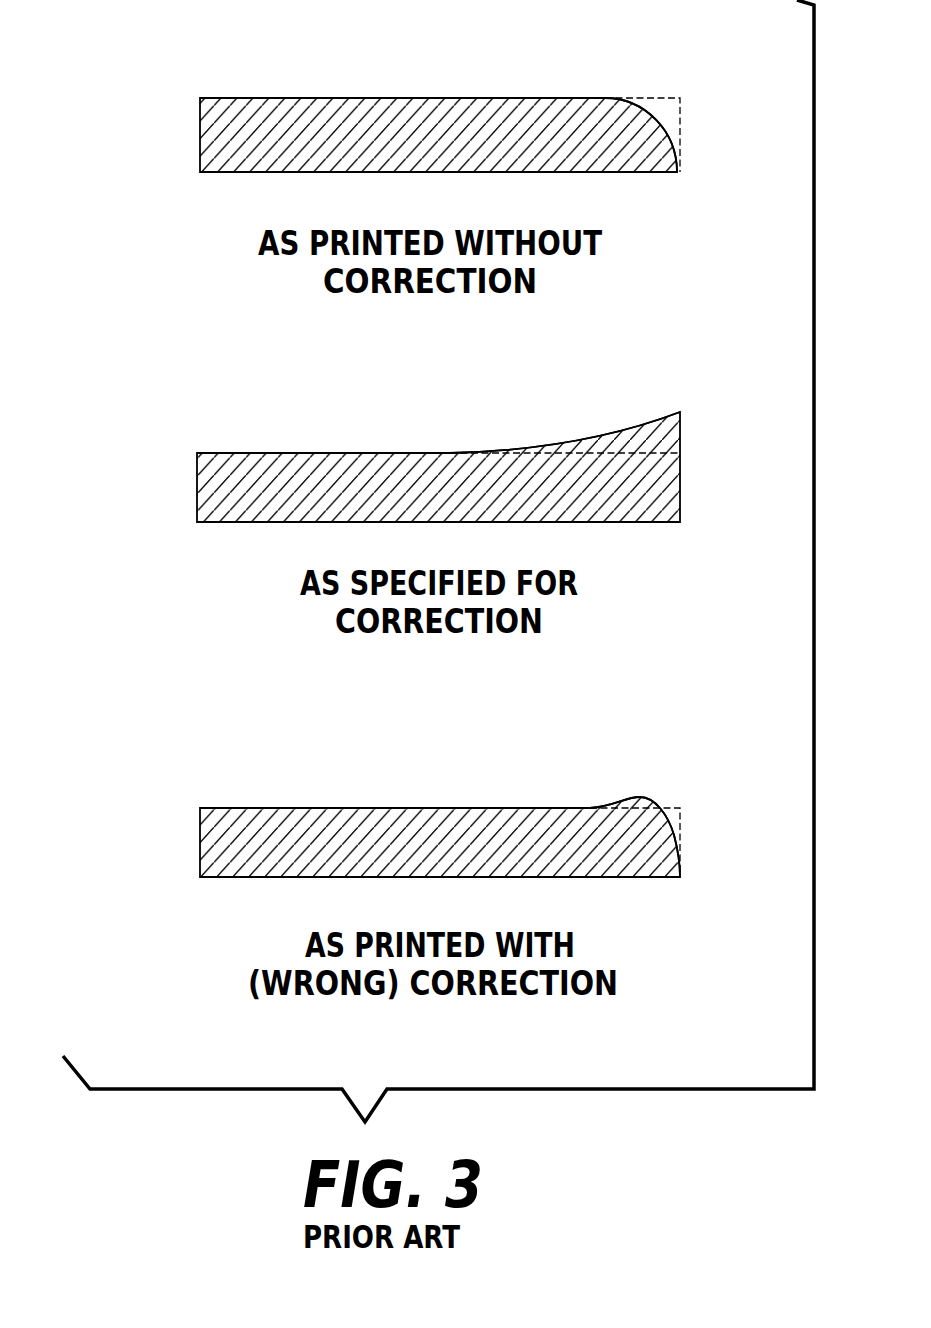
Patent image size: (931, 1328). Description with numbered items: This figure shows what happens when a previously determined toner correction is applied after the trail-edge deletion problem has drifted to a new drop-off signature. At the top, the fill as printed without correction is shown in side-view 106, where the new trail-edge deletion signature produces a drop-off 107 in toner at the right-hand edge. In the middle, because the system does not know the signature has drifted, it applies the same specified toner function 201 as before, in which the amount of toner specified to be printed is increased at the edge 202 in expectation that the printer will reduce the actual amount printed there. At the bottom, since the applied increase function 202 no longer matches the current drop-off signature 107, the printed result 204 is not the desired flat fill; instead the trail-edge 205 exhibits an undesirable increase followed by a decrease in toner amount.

The side-view of trail-edge deletion signature 106 is at (323, 99).
The drop-off 107 is at (682, 86).
The specified toner function 201 is at (235, 462).
The increase function at edge 202 is at (672, 418).
The printed result 204 is at (222, 808).
The trail-edge 205 is at (680, 799).